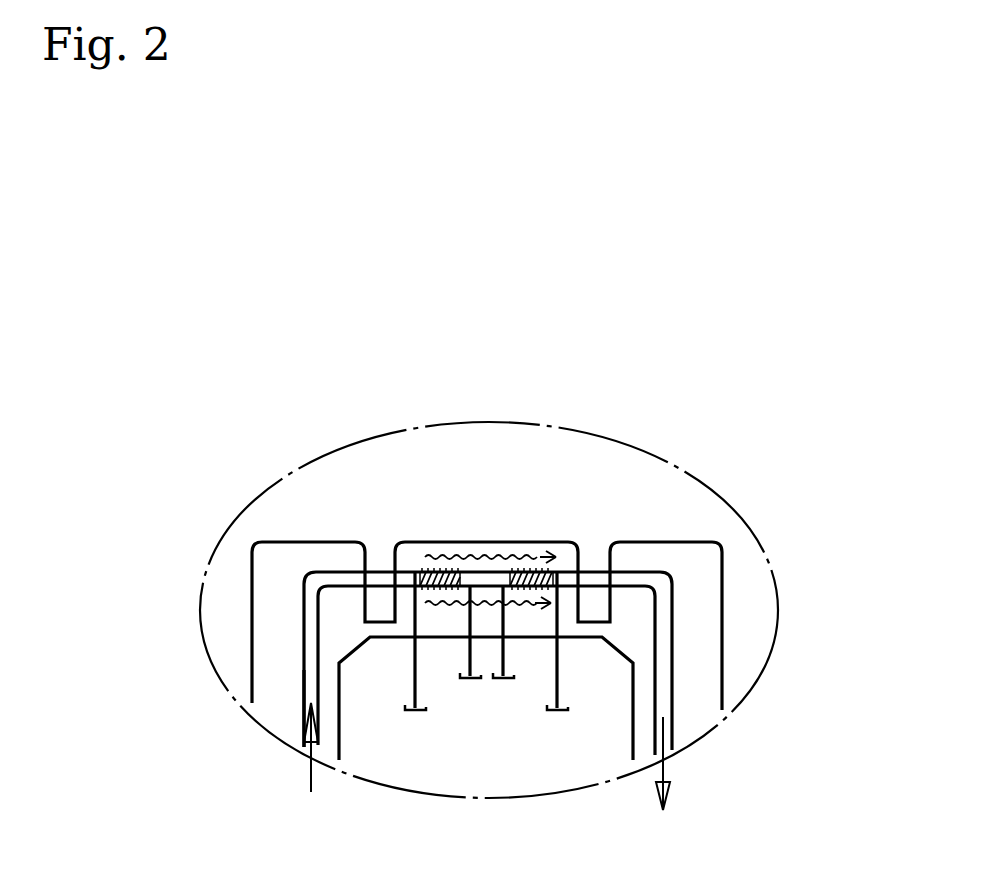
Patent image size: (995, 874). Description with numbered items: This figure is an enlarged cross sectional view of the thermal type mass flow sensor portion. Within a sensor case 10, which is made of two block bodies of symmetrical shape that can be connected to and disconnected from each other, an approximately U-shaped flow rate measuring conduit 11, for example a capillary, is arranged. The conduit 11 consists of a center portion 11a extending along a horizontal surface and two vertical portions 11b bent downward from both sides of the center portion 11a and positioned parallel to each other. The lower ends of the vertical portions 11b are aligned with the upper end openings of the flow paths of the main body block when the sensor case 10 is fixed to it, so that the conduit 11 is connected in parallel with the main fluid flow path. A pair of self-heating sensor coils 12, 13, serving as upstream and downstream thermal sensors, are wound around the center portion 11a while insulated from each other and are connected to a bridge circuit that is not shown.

The sensor case 10 is at (278, 578).
The flow rate measuring conduit 11 is at (685, 628).
The center portion 11a is at (663, 572).
The vertical portion 11b is at (303, 670).
The sensor coil 12 is at (438, 556).
The sensor coil 13 is at (532, 560).